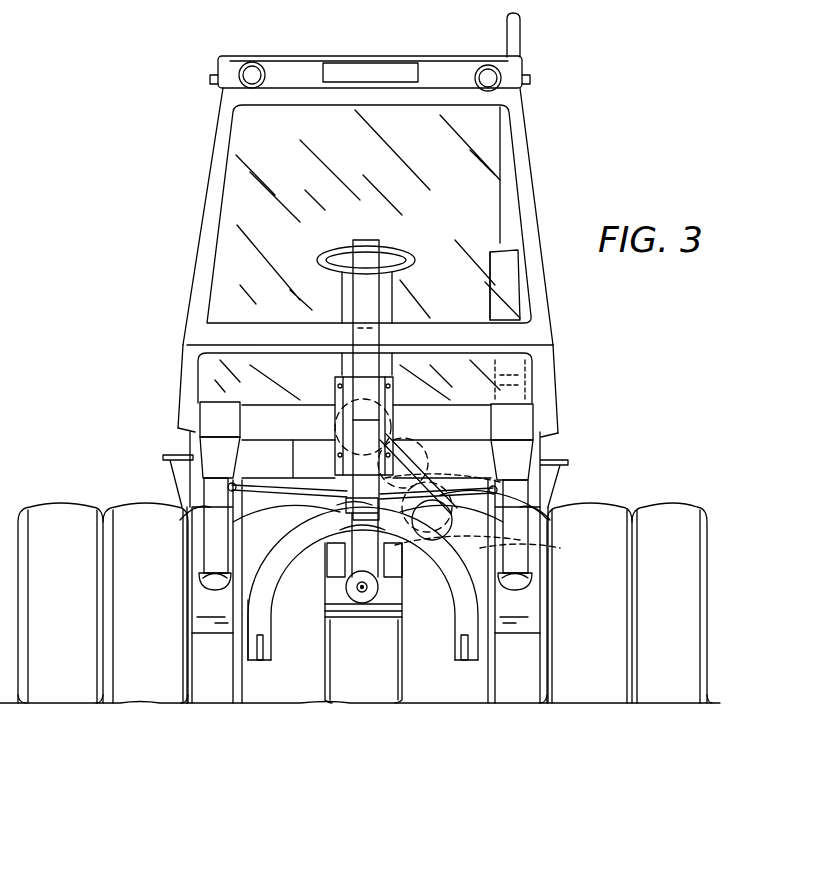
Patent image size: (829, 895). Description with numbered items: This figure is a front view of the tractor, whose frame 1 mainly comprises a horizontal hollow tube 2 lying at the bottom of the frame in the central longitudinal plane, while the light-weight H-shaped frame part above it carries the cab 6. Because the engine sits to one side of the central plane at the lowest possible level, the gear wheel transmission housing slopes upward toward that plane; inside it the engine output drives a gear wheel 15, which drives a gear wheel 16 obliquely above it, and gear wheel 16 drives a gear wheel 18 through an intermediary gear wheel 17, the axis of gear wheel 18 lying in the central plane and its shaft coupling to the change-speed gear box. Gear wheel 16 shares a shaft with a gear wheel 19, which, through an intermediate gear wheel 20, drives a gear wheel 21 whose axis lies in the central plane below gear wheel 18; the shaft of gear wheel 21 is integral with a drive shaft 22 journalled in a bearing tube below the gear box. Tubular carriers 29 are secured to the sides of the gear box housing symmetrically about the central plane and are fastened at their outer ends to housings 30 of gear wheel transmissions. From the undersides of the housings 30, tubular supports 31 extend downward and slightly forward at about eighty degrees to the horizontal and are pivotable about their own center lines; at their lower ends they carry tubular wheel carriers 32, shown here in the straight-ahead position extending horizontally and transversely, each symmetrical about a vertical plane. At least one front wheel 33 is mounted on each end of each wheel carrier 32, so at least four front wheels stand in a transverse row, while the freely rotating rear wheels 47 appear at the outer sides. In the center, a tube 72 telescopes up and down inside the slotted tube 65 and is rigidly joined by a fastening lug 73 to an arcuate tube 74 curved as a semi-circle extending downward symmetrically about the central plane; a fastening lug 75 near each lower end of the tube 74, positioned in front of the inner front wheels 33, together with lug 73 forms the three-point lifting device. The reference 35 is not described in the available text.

The frame 1 is at (338, 623).
The hollow tube 2 is at (365, 620).
The cab 6 is at (355, 170).
The gear wheel 15 is at (523, 567).
The gear wheel 16 is at (517, 537).
The gear wheel 17 is at (430, 462).
The gear wheel 18 is at (391, 426).
The gear wheel 19 is at (538, 497).
The intermediate gear wheel 20 is at (418, 567).
The gear wheel 21 is at (333, 531).
The drive shaft 22 is at (335, 510).
The tubular carriers 29 is at (302, 407).
The housings of gear wheel transmissions 30 is at (200, 415).
The tubular supports 31 is at (212, 547).
The wheel carriers 32 is at (203, 637).
The front wheel 33 is at (142, 687).
The lower link 35 is at (272, 485).
The rear wheel 47 is at (57, 507).
The tube 65 is at (368, 245).
The tube 72 is at (363, 427).
The fastening lug 73 is at (362, 550).
The arcuate tube 74 is at (273, 613).
The fastening lug 75 is at (262, 648).